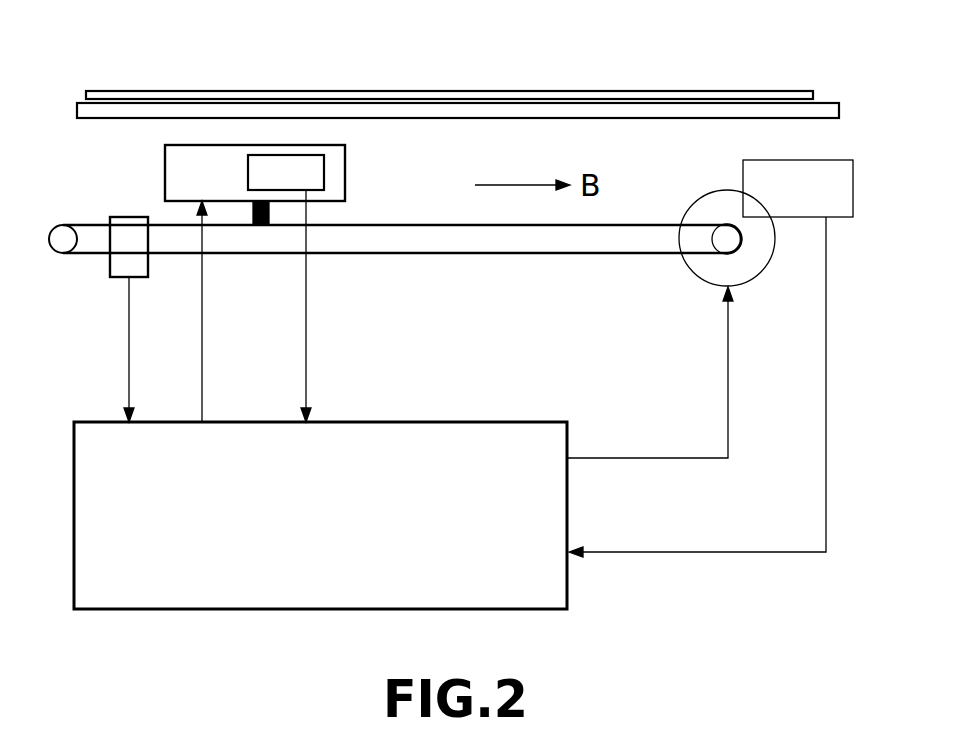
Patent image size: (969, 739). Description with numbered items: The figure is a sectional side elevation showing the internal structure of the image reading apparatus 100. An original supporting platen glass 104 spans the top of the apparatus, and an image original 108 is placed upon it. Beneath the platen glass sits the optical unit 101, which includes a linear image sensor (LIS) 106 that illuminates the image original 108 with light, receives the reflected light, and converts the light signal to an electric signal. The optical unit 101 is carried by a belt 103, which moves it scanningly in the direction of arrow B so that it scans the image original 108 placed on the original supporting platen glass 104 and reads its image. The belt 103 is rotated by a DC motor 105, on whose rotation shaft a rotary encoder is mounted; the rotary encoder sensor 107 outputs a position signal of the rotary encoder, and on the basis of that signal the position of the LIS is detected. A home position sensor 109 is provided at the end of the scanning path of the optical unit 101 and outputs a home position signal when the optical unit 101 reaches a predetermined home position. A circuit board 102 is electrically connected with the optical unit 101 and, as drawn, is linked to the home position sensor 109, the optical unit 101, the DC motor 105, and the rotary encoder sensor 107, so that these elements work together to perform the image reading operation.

The image reading apparatus 100 is at (451, 35).
The optical unit 101 is at (346, 152).
The circuit board 102 is at (318, 610).
The belt 103 is at (458, 255).
The original supporting platen glass 104 is at (820, 119).
The DC motor 105 is at (748, 282).
The linear image sensor (LIS) 106 is at (325, 172).
The rotary encoder sensor 107 is at (840, 218).
The image original 108 is at (128, 90).
The home position sensor 109 is at (128, 215).